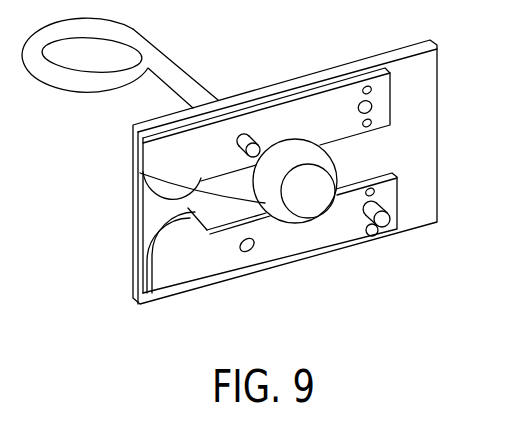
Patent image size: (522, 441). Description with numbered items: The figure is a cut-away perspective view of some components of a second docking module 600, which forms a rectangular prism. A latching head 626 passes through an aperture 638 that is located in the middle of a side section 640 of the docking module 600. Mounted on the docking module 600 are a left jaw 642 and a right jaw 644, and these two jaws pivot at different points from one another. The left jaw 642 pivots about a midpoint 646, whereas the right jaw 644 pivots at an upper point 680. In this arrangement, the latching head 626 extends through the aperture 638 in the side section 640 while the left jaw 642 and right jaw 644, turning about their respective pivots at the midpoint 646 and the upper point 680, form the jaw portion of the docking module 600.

The docking module 600 is at (261, 176).
The side section 640 is at (424, 212).
The left jaw 642 is at (326, 108).
The right jaw 644 is at (192, 270).
The latching head 626 is at (301, 203).
The aperture 638 is at (143, 173).
The midpoint 646 is at (242, 132).
The upper point 680 is at (370, 227).